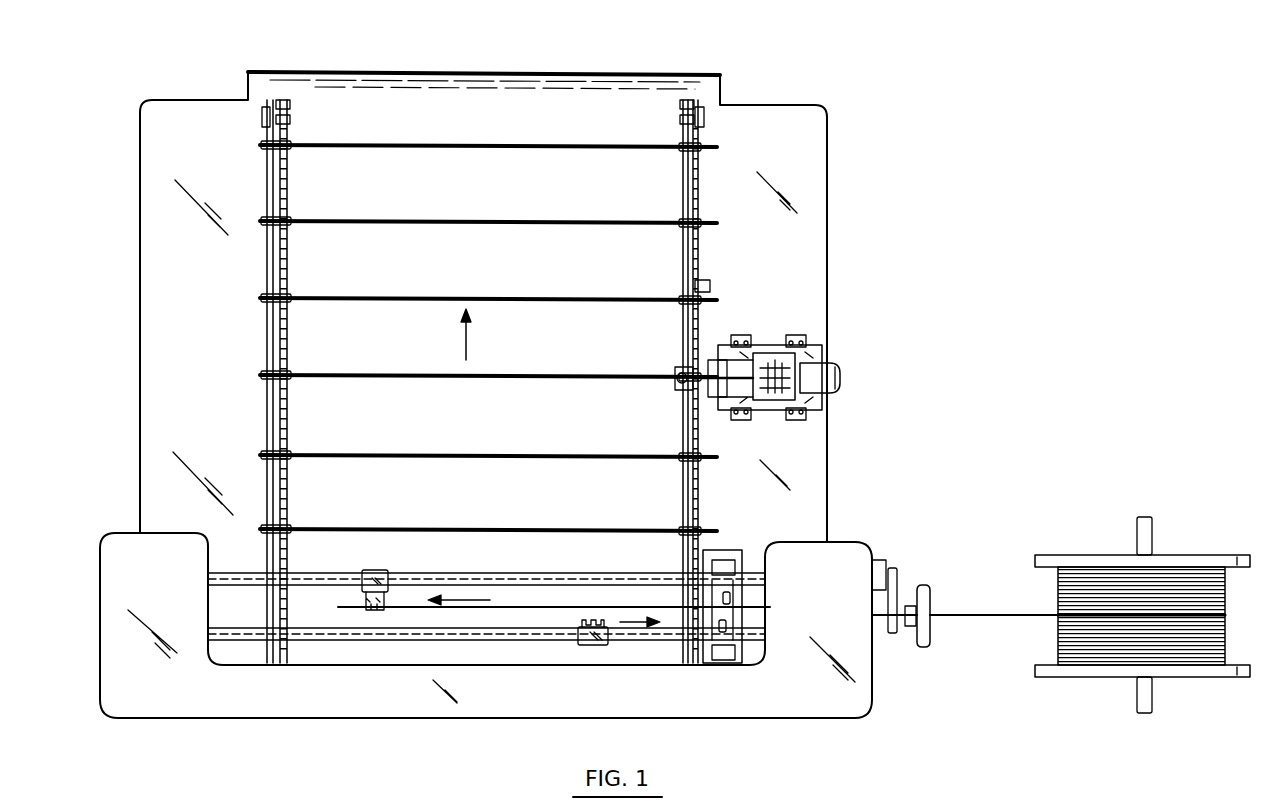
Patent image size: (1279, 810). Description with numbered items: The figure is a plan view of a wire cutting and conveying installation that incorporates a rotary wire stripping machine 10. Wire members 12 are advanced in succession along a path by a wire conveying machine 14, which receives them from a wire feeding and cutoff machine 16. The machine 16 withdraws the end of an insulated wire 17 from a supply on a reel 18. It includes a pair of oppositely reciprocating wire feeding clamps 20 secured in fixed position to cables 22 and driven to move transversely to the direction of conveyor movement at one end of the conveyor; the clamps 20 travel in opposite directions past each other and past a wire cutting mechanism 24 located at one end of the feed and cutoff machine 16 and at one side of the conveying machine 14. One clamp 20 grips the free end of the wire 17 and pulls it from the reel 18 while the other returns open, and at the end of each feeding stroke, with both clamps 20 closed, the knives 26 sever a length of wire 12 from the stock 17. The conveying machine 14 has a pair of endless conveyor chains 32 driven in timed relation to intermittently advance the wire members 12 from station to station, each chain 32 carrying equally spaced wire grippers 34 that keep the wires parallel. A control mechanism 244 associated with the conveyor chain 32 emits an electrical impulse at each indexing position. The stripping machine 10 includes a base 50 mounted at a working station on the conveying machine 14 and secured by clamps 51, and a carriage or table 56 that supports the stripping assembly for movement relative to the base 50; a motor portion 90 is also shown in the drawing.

The wire conveying machine 14 is at (755, 80).
The carriage or table 56 is at (817, 257).
The wire feeding and cutoff machine 16 is at (876, 707).
The endless conveyor chains 32 is at (683, 185).
The control mechanism 244 is at (709, 283).
The wire member 12 is at (527, 304).
The wire grippers 34 is at (683, 297).
The rotary wire stripping machine 10 is at (779, 378).
The base 50 is at (822, 405).
The motor 90 is at (841, 383).
The clamps 51 is at (795, 335).
The cables 22 is at (493, 573).
The insulated wire 17 is at (495, 610).
The wire feeding clamps 20 is at (378, 570).
The wire cutting mechanism 24 is at (752, 629).
The knives 26 is at (726, 625).
The reel 18 is at (1190, 672).